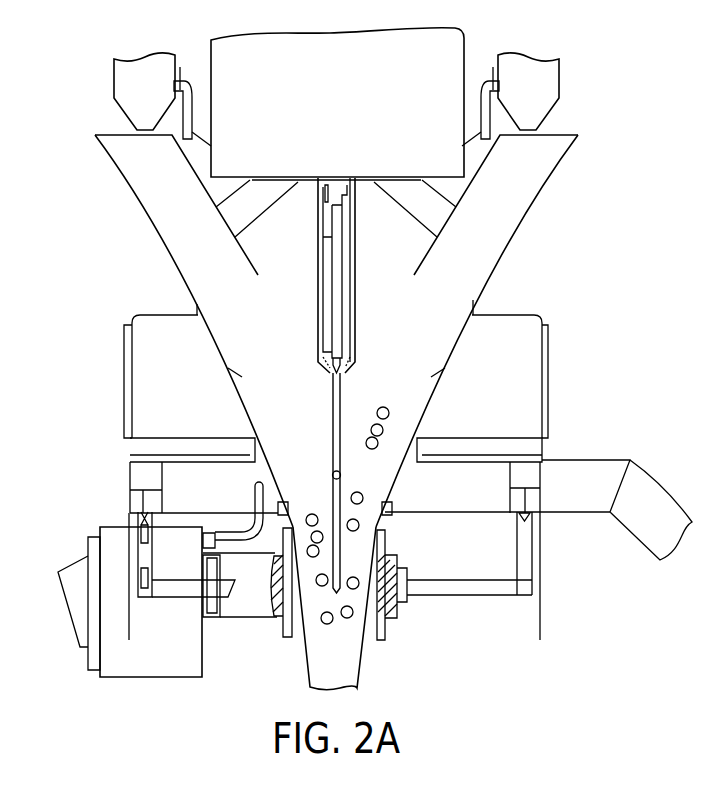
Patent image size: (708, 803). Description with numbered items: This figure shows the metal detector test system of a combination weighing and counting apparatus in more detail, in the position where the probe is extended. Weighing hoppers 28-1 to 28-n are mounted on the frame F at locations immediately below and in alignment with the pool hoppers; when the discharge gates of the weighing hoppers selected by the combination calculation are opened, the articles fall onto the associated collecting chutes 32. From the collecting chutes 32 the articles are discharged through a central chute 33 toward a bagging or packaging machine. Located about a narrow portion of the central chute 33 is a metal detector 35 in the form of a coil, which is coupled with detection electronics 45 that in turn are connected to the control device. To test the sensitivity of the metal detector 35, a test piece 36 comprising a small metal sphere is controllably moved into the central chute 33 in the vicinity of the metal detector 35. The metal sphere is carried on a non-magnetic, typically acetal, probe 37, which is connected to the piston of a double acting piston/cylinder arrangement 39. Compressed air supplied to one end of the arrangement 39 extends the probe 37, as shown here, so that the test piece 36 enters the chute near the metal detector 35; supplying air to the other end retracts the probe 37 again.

The frame F is at (212, 82).
The weighing hopper 28-1 is at (113, 77).
The weighing hopper 28-n is at (557, 80).
The collecting chute 32 is at (128, 193).
The central chute 33 is at (360, 665).
The metal detector 35 is at (385, 628).
The test piece 36 is at (337, 587).
The probe 37 is at (340, 405).
The double acting piston/cylinder arrangement 39 is at (355, 285).
The detection electronics 45 is at (120, 680).